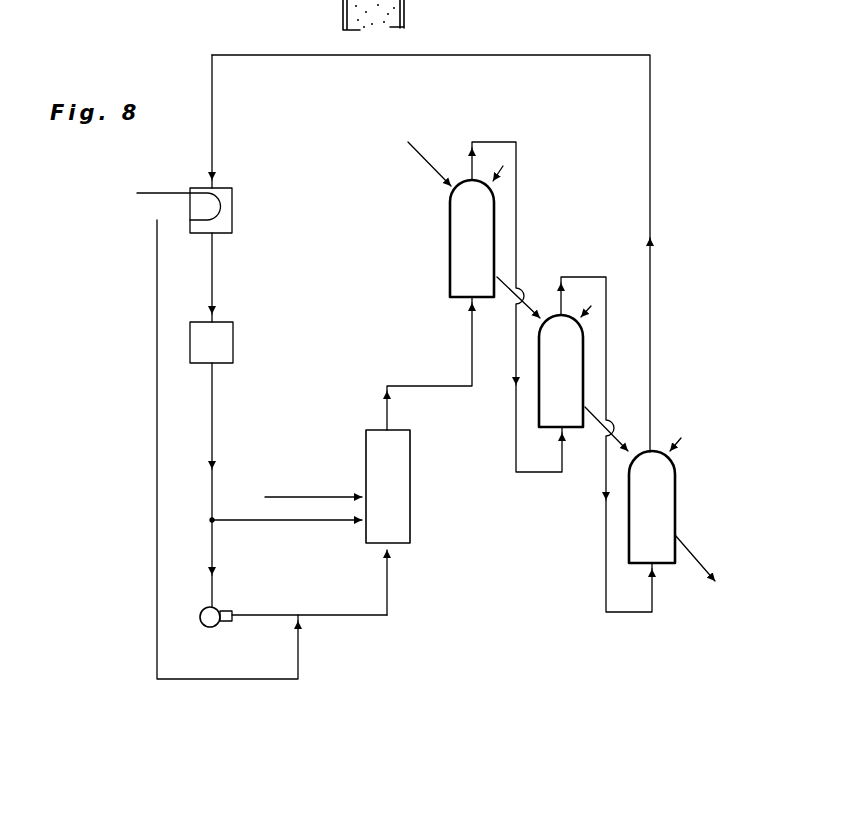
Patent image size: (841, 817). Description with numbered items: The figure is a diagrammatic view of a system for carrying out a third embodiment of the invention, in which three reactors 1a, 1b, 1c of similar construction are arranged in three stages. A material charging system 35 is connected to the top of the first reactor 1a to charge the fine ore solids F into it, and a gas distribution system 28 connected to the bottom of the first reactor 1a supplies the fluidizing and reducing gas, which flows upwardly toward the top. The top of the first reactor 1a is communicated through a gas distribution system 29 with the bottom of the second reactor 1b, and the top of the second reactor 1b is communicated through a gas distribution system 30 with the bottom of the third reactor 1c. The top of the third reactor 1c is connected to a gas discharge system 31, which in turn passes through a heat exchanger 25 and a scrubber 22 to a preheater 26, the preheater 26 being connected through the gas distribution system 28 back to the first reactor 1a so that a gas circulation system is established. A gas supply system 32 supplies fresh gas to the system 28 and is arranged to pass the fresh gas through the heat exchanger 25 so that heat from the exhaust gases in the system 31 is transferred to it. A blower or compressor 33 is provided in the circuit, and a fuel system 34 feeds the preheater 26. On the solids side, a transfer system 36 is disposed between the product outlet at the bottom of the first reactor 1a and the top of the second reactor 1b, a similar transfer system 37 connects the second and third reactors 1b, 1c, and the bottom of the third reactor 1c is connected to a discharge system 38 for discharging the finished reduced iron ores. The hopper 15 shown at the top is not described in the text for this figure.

The hopper 15 is at (374, 9).
The gas discharge system 31 is at (560, 55).
The heat exchanger 25 is at (233, 210).
The scrubber 22 is at (225, 338).
The fuel system 34 is at (310, 497).
The preheater 26 is at (402, 527).
The gas distribution system 28 is at (436, 386).
The blower or compressor 33 is at (216, 612).
The gas supply system 32 is at (228, 680).
The material charging system 35 is at (422, 160).
The gas distribution system 29 is at (517, 150).
The first reactor 1a is at (483, 228).
The transfer system 36 is at (507, 292).
The gas distribution system 30 is at (607, 293).
The second reactor 1b is at (573, 347).
The transfer system 37 is at (595, 425).
The third reactor 1c is at (662, 492).
The discharge system 38 is at (694, 565).